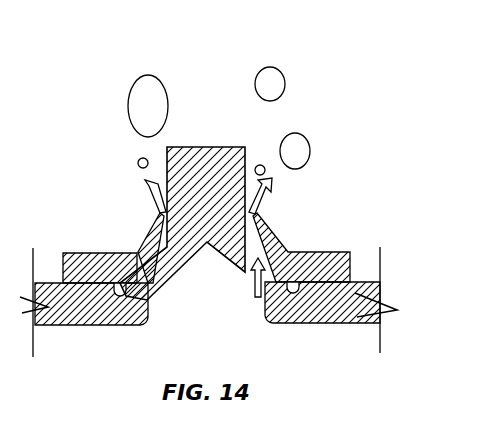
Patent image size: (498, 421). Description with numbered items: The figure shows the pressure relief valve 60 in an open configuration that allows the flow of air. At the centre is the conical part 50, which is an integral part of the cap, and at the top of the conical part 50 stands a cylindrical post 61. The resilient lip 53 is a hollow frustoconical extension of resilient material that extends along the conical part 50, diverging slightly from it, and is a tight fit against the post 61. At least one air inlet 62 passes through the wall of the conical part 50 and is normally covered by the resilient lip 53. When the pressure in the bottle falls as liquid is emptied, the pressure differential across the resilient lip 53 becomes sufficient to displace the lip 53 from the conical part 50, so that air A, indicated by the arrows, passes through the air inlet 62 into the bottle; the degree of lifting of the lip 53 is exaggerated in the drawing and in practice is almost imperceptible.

The conical part 50 is at (163, 272).
The resilient lip 53 is at (145, 243).
The cylindrical post 61 is at (223, 158).
The air inlet 62 is at (252, 278).
The pressure relief valve 60 is at (340, 166).
The air A is at (257, 78).